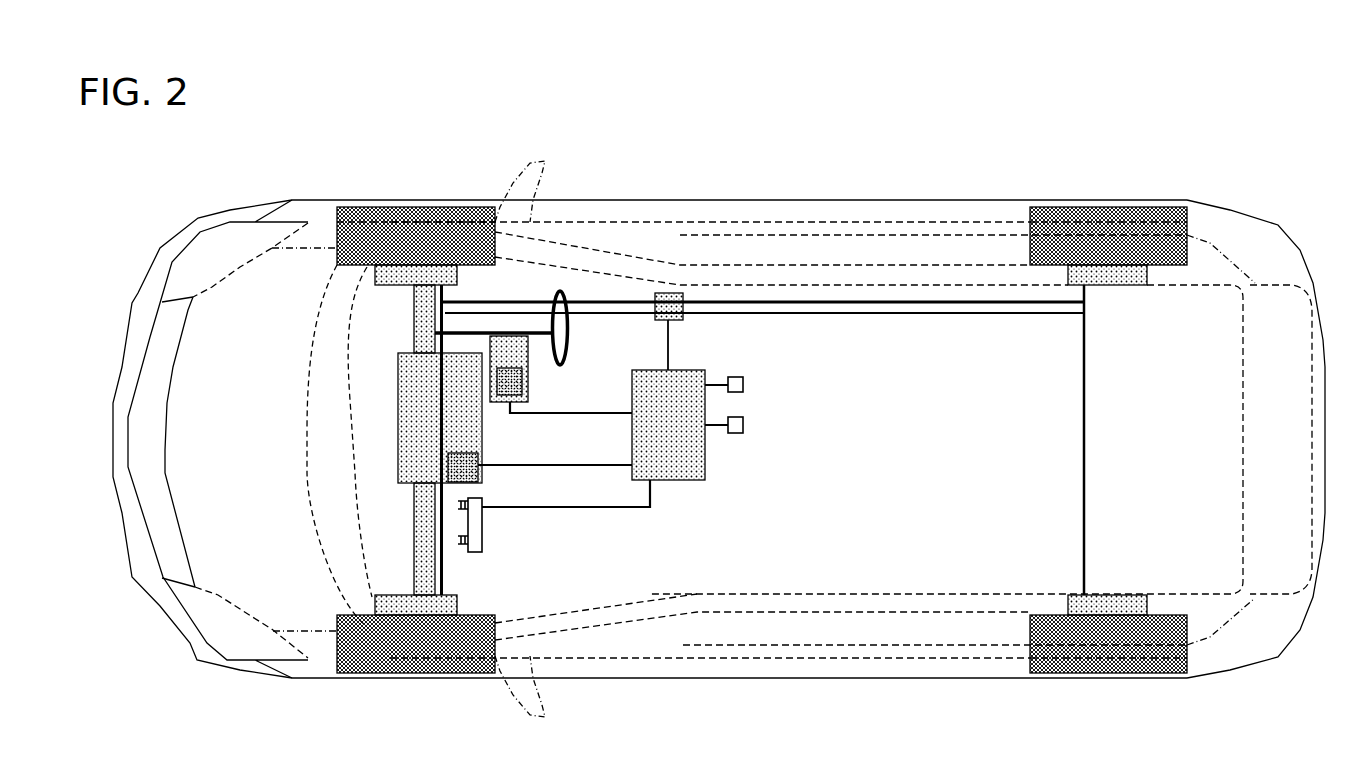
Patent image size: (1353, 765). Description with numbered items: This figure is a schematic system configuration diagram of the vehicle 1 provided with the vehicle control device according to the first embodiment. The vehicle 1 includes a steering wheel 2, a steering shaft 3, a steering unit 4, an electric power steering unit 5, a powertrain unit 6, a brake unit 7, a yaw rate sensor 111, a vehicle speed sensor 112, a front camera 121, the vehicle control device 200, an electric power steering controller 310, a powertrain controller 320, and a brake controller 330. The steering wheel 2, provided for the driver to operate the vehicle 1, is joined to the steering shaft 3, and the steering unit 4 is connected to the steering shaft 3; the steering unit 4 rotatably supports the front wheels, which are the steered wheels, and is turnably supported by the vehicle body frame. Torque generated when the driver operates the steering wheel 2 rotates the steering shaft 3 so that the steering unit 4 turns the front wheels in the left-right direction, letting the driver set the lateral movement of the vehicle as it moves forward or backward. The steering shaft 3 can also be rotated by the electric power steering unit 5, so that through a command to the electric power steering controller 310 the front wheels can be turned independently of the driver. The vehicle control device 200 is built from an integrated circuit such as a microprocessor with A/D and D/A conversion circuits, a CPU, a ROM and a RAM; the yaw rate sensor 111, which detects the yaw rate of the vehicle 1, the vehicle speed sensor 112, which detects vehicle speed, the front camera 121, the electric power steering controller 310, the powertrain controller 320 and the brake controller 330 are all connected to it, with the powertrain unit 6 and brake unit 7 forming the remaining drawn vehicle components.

The vehicle 1 is at (993, 199).
The steering wheel 2 is at (568, 357).
The steering shaft 3 is at (540, 333).
The steering unit 4 is at (413, 512).
The electric power steering unit 5 is at (398, 355).
The powertrain unit 6 is at (398, 415).
The brake unit 7 is at (458, 277).
The yaw rate sensor 111 is at (746, 384).
The vehicle speed sensor 112 is at (746, 425).
The front camera 121 is at (483, 512).
The vehicle control device 200 is at (700, 482).
The electric power steering controller 310 is at (530, 389).
The powertrain controller 320 is at (480, 474).
The brake controller 330 is at (668, 293).